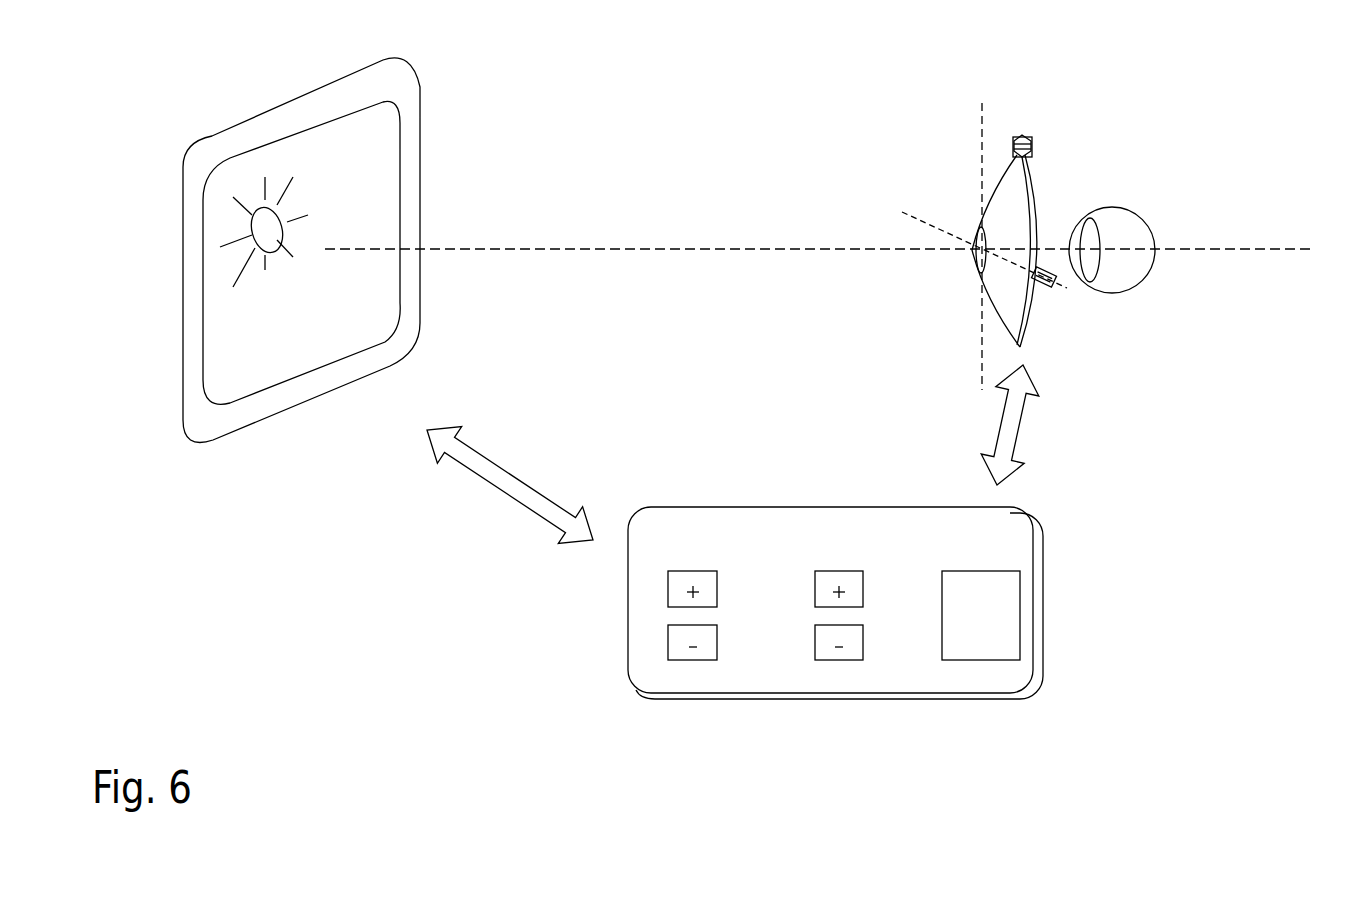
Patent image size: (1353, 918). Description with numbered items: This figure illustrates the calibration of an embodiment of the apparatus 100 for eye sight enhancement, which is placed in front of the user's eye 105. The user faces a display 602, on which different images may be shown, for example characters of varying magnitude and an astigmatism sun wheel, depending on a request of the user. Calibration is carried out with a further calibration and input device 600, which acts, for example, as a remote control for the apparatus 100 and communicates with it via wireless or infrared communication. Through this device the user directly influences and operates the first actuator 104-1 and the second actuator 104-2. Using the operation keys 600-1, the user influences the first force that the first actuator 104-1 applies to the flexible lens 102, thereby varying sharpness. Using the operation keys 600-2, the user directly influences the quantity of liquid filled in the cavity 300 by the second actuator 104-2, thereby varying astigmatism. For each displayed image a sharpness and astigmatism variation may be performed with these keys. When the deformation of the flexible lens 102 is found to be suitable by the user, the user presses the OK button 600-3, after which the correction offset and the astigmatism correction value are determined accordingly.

The display 602 is at (350, 143).
The apparatus 100 is at (1012, 107).
The flexible lens 102 is at (995, 218).
The cavity 300 is at (972, 250).
The first actuator 104-1 is at (1028, 133).
The second actuator 104-2 is at (1047, 287).
The user's eye 105 is at (1113, 225).
The further calibration and input device 600 is at (953, 528).
The operation keys 600-1 is at (670, 585).
The operation keys 600-2 is at (817, 585).
The OK button 600-3 is at (958, 633).